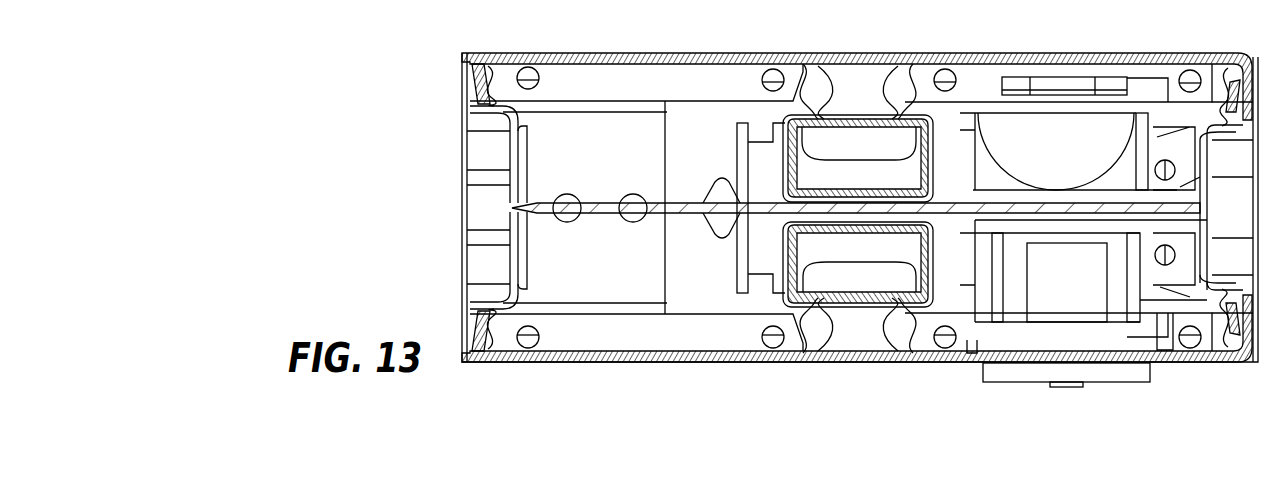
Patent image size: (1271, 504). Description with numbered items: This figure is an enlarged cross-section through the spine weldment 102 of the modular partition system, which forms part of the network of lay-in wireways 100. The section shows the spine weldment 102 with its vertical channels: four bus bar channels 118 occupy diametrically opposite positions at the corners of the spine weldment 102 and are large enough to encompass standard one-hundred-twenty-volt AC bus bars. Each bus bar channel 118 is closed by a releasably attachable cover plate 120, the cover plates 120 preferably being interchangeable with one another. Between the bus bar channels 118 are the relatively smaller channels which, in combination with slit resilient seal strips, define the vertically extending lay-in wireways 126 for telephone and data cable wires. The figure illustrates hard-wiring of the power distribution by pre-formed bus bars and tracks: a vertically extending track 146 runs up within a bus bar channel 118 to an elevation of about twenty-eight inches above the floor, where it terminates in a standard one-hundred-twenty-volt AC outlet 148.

The lay-in wireways 100 is at (414, 149).
The spine weldment 102 is at (486, 262).
The bus bar channels 118 is at (558, 82).
The cover plate 120 is at (678, 56).
The lay-in wireways 126 is at (852, 145).
The vertically extending track 146 is at (1025, 352).
The 120 VAC outlet 148 is at (1140, 372).